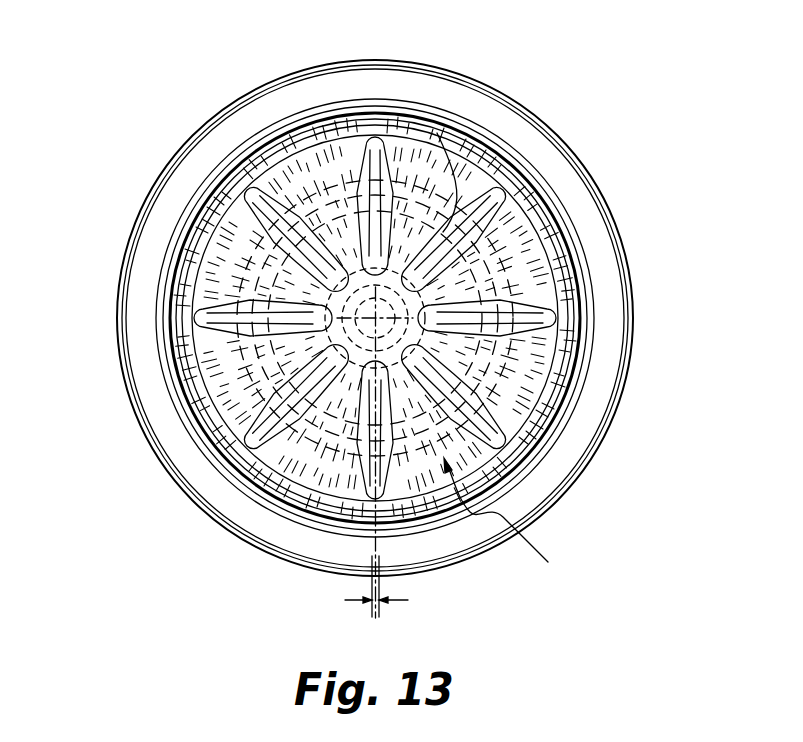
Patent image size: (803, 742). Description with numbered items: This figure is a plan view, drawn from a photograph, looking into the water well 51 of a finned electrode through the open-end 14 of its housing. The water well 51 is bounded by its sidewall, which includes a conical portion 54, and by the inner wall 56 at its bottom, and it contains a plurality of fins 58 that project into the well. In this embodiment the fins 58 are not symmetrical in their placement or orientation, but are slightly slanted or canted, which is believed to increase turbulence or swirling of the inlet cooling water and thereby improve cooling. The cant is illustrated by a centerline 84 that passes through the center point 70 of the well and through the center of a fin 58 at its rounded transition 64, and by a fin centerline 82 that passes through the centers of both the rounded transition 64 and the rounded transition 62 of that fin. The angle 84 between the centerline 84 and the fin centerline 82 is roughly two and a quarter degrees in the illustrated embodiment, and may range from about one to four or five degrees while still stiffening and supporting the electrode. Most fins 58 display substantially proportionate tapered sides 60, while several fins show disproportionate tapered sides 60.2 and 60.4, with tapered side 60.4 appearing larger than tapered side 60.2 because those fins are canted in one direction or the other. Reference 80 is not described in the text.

The open-end 14 is at (593, 418).
The water well 51 is at (505, 527).
The conical portion 54 is at (525, 257).
The inner wall 56 is at (275, 253).
The fins 58 is at (373, 138).
The tapered sides 60 is at (357, 203).
The tapered side 60.2 is at (270, 308).
The tapered side 60.4 is at (240, 343).
The rounded transition 62 is at (288, 213).
The rounded transition 64 is at (247, 190).
The center point 70 is at (413, 330).
The slot 80 is at (372, 614).
The fin centerline 82 is at (385, 593).
The centerline 84 is at (378, 616).